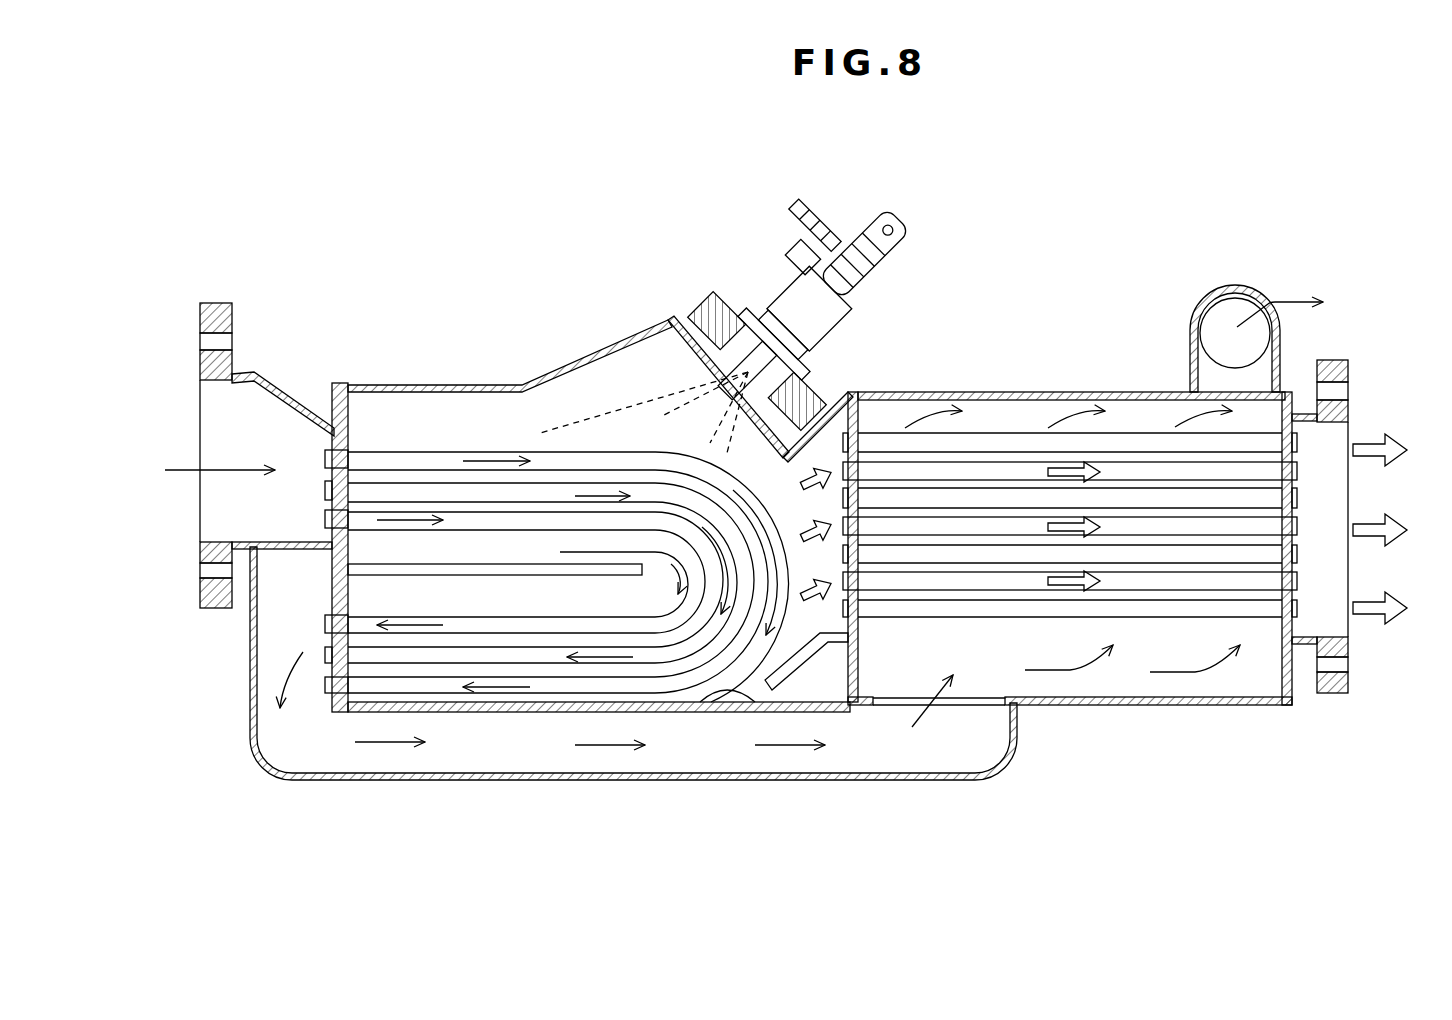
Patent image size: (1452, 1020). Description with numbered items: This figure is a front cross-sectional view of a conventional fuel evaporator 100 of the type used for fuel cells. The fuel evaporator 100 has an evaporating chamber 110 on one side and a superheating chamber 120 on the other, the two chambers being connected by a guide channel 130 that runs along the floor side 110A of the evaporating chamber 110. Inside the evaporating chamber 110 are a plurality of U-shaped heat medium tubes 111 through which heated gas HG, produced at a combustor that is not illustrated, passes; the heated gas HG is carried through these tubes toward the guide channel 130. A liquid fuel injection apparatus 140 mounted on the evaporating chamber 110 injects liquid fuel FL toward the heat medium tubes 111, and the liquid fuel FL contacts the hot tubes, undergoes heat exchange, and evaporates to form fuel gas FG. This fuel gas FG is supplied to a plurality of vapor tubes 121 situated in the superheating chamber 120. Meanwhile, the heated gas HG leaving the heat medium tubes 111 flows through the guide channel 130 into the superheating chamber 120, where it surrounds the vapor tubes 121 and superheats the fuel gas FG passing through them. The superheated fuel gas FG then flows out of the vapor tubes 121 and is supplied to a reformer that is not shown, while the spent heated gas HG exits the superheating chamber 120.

The fuel evaporator 100 is at (917, 226).
The evaporating chamber 110 is at (540, 405).
The floor side of the evaporating chamber 110A is at (716, 690).
The U-shaped heat medium tubes 111 is at (410, 490).
The superheating chamber 120 is at (1132, 413).
The vapor tubes 121 is at (1017, 473).
The guide channel 130 is at (523, 750).
The liquid fuel injection apparatus 140 is at (805, 310).
The liquid fuel FL is at (673, 380).
The heated gas HG is at (745, 387).
The fuel gas FG is at (1387, 529).